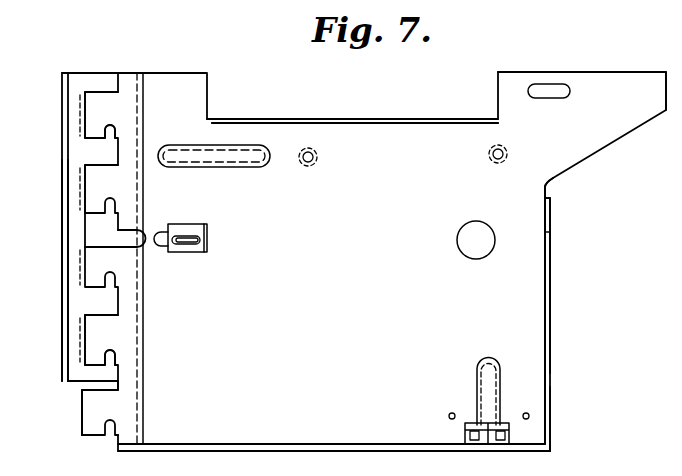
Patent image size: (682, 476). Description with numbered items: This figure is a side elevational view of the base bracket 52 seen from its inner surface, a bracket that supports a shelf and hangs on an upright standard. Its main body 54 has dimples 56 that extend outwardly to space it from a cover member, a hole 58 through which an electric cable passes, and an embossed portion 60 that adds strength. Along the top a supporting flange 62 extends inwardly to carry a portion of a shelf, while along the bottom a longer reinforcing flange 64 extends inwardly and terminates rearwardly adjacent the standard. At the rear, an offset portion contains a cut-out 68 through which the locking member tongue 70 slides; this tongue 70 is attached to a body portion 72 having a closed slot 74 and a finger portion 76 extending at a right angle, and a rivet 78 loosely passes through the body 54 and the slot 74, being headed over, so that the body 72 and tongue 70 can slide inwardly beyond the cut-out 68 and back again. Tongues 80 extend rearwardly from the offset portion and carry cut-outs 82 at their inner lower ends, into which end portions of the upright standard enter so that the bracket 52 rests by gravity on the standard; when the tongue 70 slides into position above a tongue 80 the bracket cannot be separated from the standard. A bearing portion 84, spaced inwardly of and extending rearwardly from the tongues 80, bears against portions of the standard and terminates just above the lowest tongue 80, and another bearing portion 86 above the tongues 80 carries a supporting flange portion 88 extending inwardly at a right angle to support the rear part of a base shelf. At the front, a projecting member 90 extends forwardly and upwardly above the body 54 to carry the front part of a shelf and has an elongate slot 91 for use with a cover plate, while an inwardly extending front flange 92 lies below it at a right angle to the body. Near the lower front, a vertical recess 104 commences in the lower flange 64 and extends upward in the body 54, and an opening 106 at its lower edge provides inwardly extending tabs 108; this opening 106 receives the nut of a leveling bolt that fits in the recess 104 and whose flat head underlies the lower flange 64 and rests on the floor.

The base bracket 52 is at (364, 261).
The main body 54 is at (500, 282).
The dimples 56 is at (317, 157).
The hole 58 is at (459, 240).
The embossed portion 60 is at (232, 150).
The supporting flange 62 is at (432, 117).
The reinforcing flange 64 is at (297, 443).
The cut-out 68 is at (135, 240).
The locking member tongue 70 is at (162, 232).
The body portion 72 is at (195, 227).
The closed slot 74 is at (190, 248).
The finger portion 76 is at (208, 236).
The rivet 78 is at (181, 250).
The tongues 80 is at (100, 117).
The cut-outs 82 is at (115, 128).
The bearing portion 84 is at (83, 375).
The bearing portion 86 is at (107, 78).
The supporting flange portion 88 is at (67, 264).
The projecting member 90 is at (623, 88).
The elongate slot 91 is at (552, 88).
The front flange 92 is at (553, 316).
The vertical recess 104 is at (494, 384).
The opening 106 is at (488, 442).
The tabs 108 is at (470, 437).